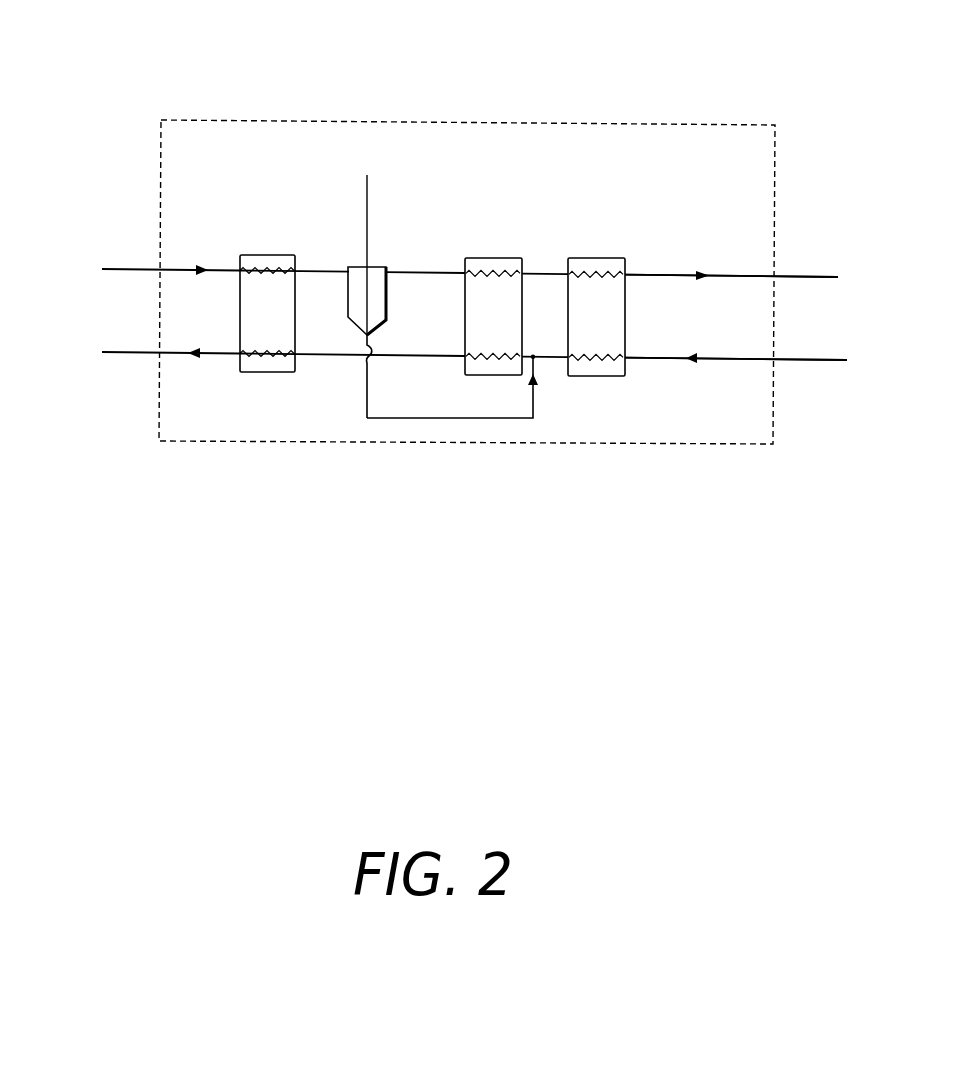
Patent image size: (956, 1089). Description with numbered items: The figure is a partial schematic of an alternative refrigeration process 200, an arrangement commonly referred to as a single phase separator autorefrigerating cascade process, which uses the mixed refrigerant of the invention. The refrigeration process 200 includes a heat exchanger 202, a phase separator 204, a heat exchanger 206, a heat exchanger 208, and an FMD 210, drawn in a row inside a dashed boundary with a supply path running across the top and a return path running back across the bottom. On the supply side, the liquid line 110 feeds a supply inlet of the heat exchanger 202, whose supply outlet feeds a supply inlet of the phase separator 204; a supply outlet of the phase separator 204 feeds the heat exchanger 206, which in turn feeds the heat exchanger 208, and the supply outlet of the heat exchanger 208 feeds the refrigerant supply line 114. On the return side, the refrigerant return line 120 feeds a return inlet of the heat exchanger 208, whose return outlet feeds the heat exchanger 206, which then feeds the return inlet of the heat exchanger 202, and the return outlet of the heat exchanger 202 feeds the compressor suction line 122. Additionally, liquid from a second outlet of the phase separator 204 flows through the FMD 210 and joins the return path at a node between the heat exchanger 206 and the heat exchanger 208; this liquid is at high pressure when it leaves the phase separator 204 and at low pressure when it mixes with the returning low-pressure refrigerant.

The refrigeration process 200 is at (254, 105).
The heat exchanger 202 is at (262, 255).
The phase separator 204 is at (383, 266).
The heat exchanger 206 is at (493, 258).
The heat exchanger 208 is at (606, 258).
The FMD 210 is at (454, 415).
The liquid line 110 is at (137, 269).
The refrigerant supply line 114 is at (792, 276).
The refrigerant return line 120 is at (792, 360).
The compressor suction line 122 is at (137, 352).